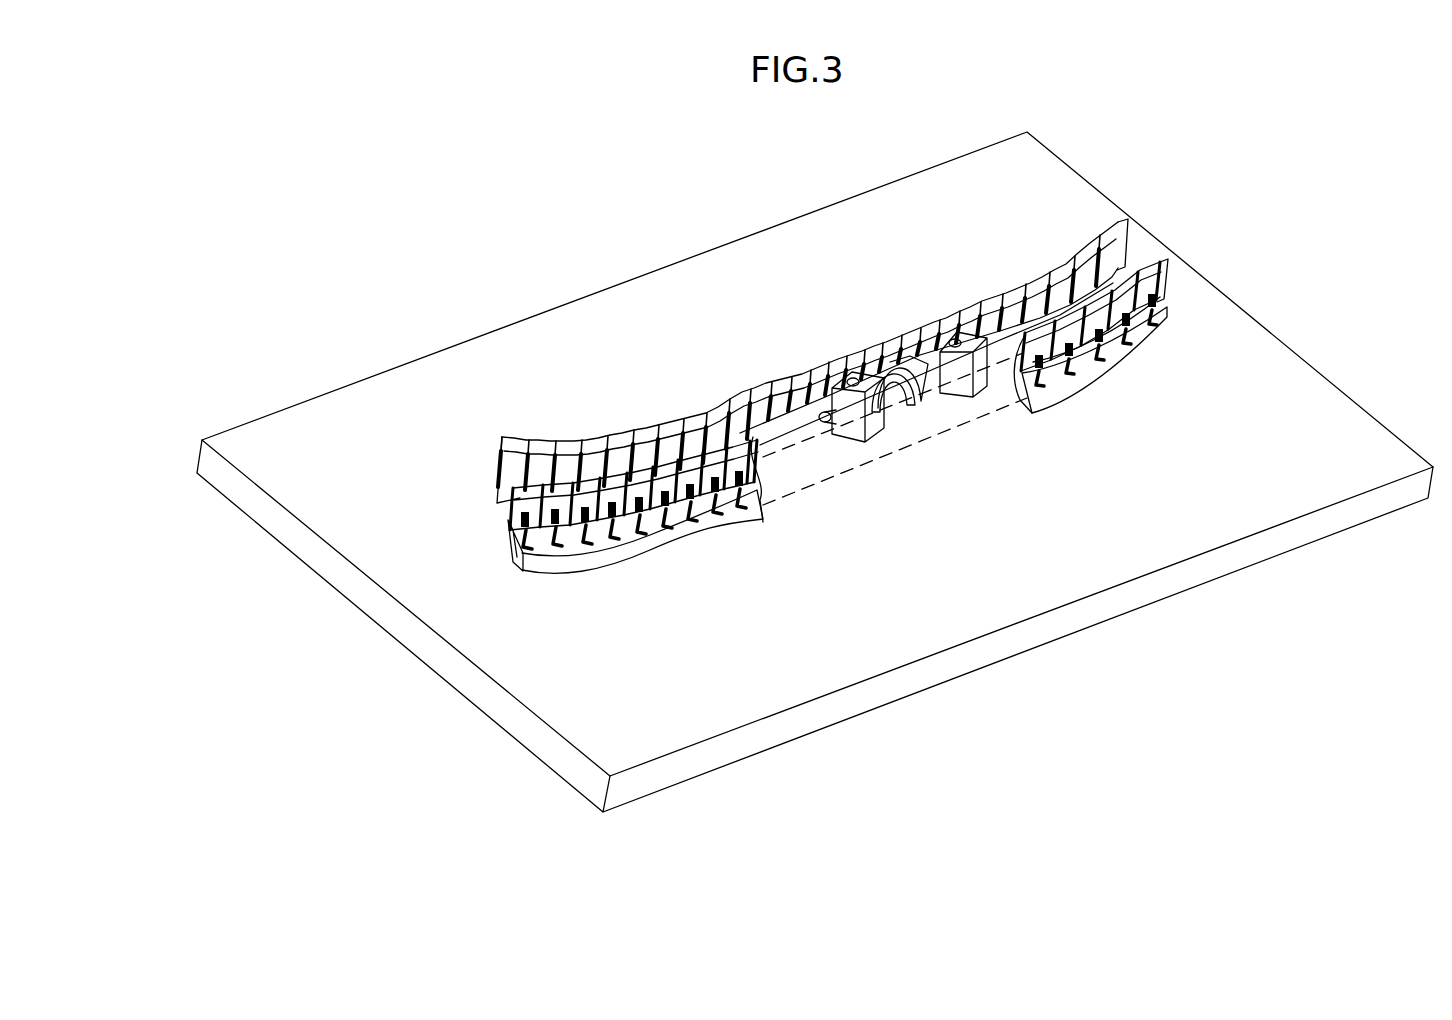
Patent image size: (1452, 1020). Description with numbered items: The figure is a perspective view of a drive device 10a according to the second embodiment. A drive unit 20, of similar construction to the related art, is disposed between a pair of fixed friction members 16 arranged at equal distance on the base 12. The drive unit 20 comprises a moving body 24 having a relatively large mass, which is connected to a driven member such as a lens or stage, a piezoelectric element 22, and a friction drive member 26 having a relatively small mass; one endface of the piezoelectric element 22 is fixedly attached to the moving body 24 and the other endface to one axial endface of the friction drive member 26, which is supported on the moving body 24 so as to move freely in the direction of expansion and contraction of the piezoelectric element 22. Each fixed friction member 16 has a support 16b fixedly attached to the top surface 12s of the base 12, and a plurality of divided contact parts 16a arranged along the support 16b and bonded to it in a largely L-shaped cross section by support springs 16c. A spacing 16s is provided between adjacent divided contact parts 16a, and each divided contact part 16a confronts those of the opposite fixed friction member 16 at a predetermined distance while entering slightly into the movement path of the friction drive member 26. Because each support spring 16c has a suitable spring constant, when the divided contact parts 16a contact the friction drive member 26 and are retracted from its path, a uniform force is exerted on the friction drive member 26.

The drive device 10a is at (527, 214).
The base 12 is at (848, 707).
The top surface 12s is at (977, 615).
The fixed friction member 16 is at (497, 458).
The divided contact part 16a is at (513, 510).
The support 16b is at (515, 555).
The support spring 16c is at (550, 538).
The spacing 16s is at (580, 553).
The drive unit 20 is at (1008, 505).
The piezoelectric element 22 is at (938, 385).
The moving body 24 is at (965, 390).
The friction drive member 26 is at (903, 397).